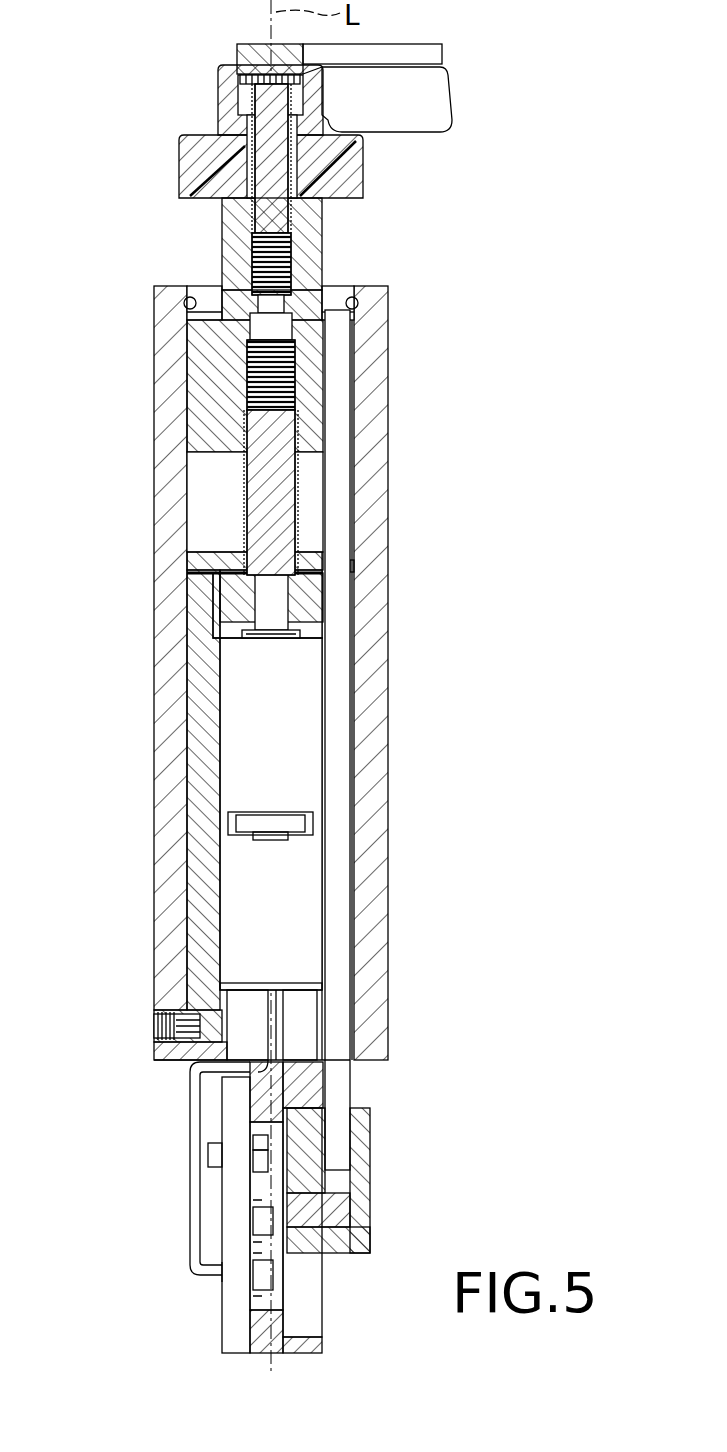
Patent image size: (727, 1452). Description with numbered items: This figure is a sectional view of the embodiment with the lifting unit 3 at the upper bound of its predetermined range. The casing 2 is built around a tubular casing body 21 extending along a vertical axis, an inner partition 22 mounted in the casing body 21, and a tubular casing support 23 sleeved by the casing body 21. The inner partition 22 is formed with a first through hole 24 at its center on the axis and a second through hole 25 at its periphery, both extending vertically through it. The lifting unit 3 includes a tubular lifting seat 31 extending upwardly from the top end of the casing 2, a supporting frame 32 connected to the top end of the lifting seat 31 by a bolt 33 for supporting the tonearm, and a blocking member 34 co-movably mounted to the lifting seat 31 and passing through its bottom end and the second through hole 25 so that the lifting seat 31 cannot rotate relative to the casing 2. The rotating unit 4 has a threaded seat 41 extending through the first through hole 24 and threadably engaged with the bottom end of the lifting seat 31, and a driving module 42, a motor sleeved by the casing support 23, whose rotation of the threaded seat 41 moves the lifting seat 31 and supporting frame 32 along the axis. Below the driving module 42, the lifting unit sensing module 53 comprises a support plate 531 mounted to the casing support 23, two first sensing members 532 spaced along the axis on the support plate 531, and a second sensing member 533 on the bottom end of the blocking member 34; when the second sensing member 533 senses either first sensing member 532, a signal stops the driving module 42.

The casing 2 is at (344, 673).
The casing body 21 is at (372, 522).
The inner partition 22 is at (255, 578).
The casing support 23 is at (207, 663).
The first through hole 24 is at (228, 567).
The second through hole 25 is at (355, 562).
The lifting unit 3 is at (279, 607).
The lifting seat 31 is at (222, 382).
The supporting frame 32 is at (366, 168).
The bolt 33 is at (255, 158).
The blocking member 34 is at (333, 752).
The rotating unit 4 is at (205, 815).
The threaded seat 41 is at (230, 600).
The driving module 42 is at (240, 707).
The lifting unit sensing module 53 is at (206, 1206).
The support plate 531 is at (232, 1188).
The first sensing members 532 is at (262, 1270).
The second sensing member 533 is at (308, 1200).